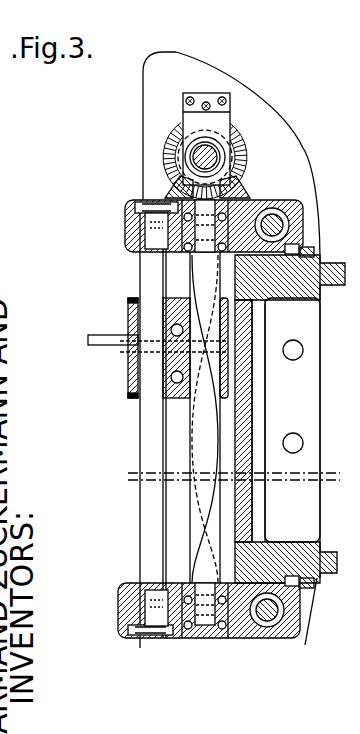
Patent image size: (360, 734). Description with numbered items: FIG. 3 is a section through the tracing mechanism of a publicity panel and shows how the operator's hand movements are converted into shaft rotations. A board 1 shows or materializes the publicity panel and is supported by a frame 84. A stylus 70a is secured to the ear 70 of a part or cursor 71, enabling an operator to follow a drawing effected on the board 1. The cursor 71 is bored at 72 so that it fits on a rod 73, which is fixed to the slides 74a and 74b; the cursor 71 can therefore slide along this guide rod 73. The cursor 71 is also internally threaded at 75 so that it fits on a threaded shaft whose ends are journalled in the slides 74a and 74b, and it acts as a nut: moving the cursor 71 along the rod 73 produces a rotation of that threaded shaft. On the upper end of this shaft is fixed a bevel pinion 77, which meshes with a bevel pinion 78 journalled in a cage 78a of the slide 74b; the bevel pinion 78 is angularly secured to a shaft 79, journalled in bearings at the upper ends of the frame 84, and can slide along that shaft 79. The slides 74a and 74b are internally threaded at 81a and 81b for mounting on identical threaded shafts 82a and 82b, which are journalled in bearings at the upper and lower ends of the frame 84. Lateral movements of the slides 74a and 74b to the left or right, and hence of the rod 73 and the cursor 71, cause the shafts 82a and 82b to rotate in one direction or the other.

The board 1 is at (241, 378).
The ear 70 is at (160, 455).
The stylus 70a is at (115, 340).
The cursor 71 is at (133, 348).
The bore 72 is at (128, 387).
The rod 73 is at (160, 455).
The slide 74a is at (120, 604).
The slide 74b is at (147, 235).
The internal thread 75 is at (253, 348).
The bevel pinion 77 is at (242, 186).
The bevel pinion 78 is at (230, 143).
The cage 78a is at (183, 115).
The shaft 79 is at (200, 157).
The internal thread 81a is at (303, 633).
The internal thread 81b is at (297, 236).
The threaded shaft 82a is at (262, 632).
The threaded shaft 82b is at (282, 222).
The frame 84 is at (322, 293).